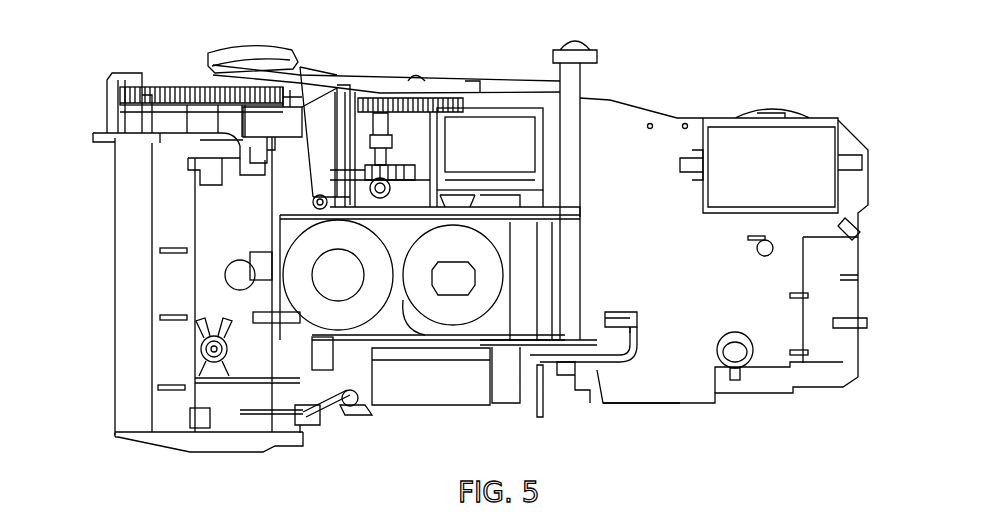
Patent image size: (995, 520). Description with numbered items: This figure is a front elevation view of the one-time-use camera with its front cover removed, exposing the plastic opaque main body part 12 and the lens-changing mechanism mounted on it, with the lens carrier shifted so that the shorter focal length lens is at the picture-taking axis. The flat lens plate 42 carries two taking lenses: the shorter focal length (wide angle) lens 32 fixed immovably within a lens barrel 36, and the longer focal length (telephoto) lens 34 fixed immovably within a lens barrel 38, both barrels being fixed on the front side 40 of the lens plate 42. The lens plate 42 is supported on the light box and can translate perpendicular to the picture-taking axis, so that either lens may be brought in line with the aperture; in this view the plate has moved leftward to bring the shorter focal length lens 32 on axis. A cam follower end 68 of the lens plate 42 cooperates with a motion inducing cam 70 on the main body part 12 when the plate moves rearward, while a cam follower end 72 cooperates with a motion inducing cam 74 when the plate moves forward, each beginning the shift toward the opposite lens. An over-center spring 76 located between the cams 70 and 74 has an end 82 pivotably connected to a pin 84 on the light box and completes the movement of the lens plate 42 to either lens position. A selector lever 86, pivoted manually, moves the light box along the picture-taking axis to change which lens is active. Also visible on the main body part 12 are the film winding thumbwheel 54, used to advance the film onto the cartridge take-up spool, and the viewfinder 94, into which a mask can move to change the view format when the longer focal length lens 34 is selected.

The main body part 12 is at (112, 333).
The shorter focal length front taking lens 32 is at (457, 283).
The longer focal length front taking lens 34 is at (345, 285).
The lens barrel 36 is at (428, 308).
The lens barrel 38 is at (303, 255).
The front side of lens carrier 40 is at (395, 235).
The lens plate 42 is at (270, 216).
The film winding thumbwheel 54 is at (172, 92).
The cam follower end 68 is at (510, 245).
The motion inducing cam 70 is at (612, 313).
The cam follower end 72 is at (265, 297).
The motion inducing cam 74 is at (290, 322).
The over-center spring 76 is at (305, 428).
The spring end 82 is at (352, 406).
The pin 84 is at (360, 403).
The selector lever 86 is at (590, 83).
The viewfinder 94 is at (507, 128).